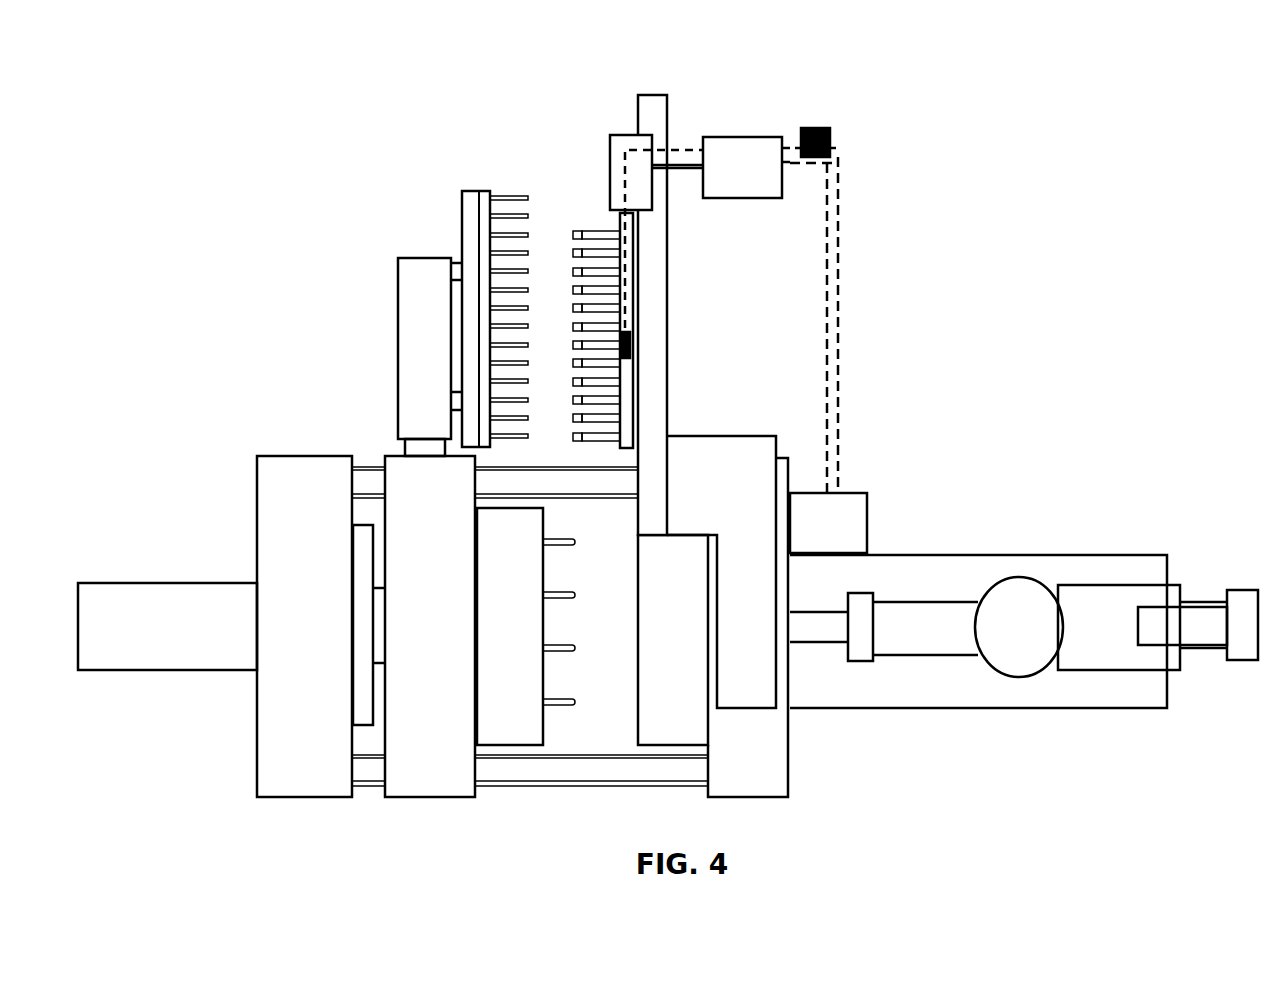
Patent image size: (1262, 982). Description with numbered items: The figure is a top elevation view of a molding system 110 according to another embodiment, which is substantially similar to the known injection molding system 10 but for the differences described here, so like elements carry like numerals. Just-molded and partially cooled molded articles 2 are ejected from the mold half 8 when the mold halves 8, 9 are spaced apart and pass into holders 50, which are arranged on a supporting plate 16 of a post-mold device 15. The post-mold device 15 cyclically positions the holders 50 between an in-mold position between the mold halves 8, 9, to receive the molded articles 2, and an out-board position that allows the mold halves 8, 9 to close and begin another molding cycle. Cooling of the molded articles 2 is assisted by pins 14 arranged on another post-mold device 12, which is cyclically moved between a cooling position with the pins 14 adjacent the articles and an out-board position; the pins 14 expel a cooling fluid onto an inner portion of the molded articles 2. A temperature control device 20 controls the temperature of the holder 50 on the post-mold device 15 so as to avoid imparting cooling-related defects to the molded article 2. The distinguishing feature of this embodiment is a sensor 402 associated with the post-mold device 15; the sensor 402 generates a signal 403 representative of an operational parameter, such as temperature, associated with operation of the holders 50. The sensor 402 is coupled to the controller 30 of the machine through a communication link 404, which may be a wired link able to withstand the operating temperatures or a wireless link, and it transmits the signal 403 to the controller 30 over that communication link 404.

The molding system 110 is at (668, 405).
The injection molding system 10 is at (739, 381).
The post-mold device 12 is at (434, 231).
The pins 14 is at (497, 238).
The molded articles 2 is at (578, 231).
The post-mold device 15 is at (706, 252).
The holders 50 is at (615, 226).
The supporting plate 16 is at (633, 298).
The sensor 402 is at (631, 343).
The temperature control device 20 is at (746, 167).
The signal 403 is at (810, 129).
The communication link 404 is at (839, 180).
The controller 30 is at (828, 523).
The mold half 8 is at (506, 646).
The mold half 9 is at (681, 644).